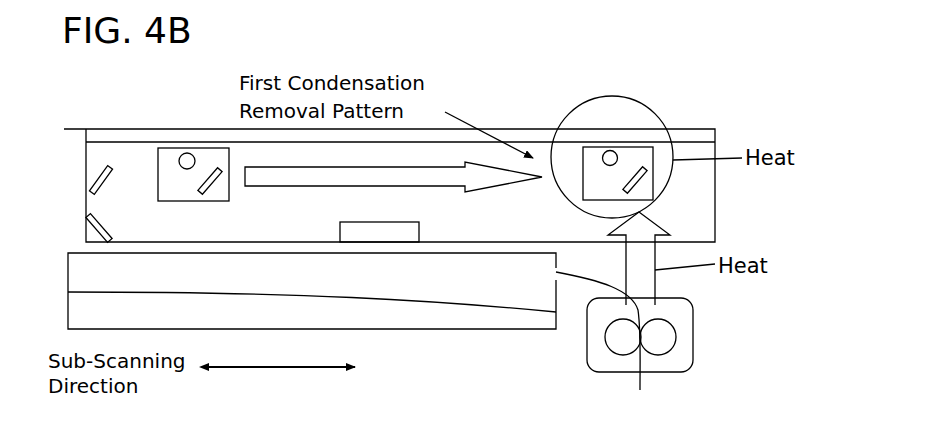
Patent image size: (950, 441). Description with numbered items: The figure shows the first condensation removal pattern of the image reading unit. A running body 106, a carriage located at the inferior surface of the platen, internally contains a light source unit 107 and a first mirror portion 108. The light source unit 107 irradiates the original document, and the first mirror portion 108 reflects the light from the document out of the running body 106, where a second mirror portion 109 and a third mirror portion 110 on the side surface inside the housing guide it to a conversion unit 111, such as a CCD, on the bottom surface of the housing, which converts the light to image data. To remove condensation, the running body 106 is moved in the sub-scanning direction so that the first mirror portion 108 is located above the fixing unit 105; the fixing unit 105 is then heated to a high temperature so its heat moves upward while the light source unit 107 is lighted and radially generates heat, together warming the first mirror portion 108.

The fixing unit 105 is at (705, 337).
The running body 106 is at (158, 165).
The light source unit 107 is at (183, 166).
The first mirror portion 108 is at (214, 183).
The second mirror portion 109 is at (97, 180).
The third mirror portion 110 is at (88, 232).
The conversion unit 111 is at (420, 233).